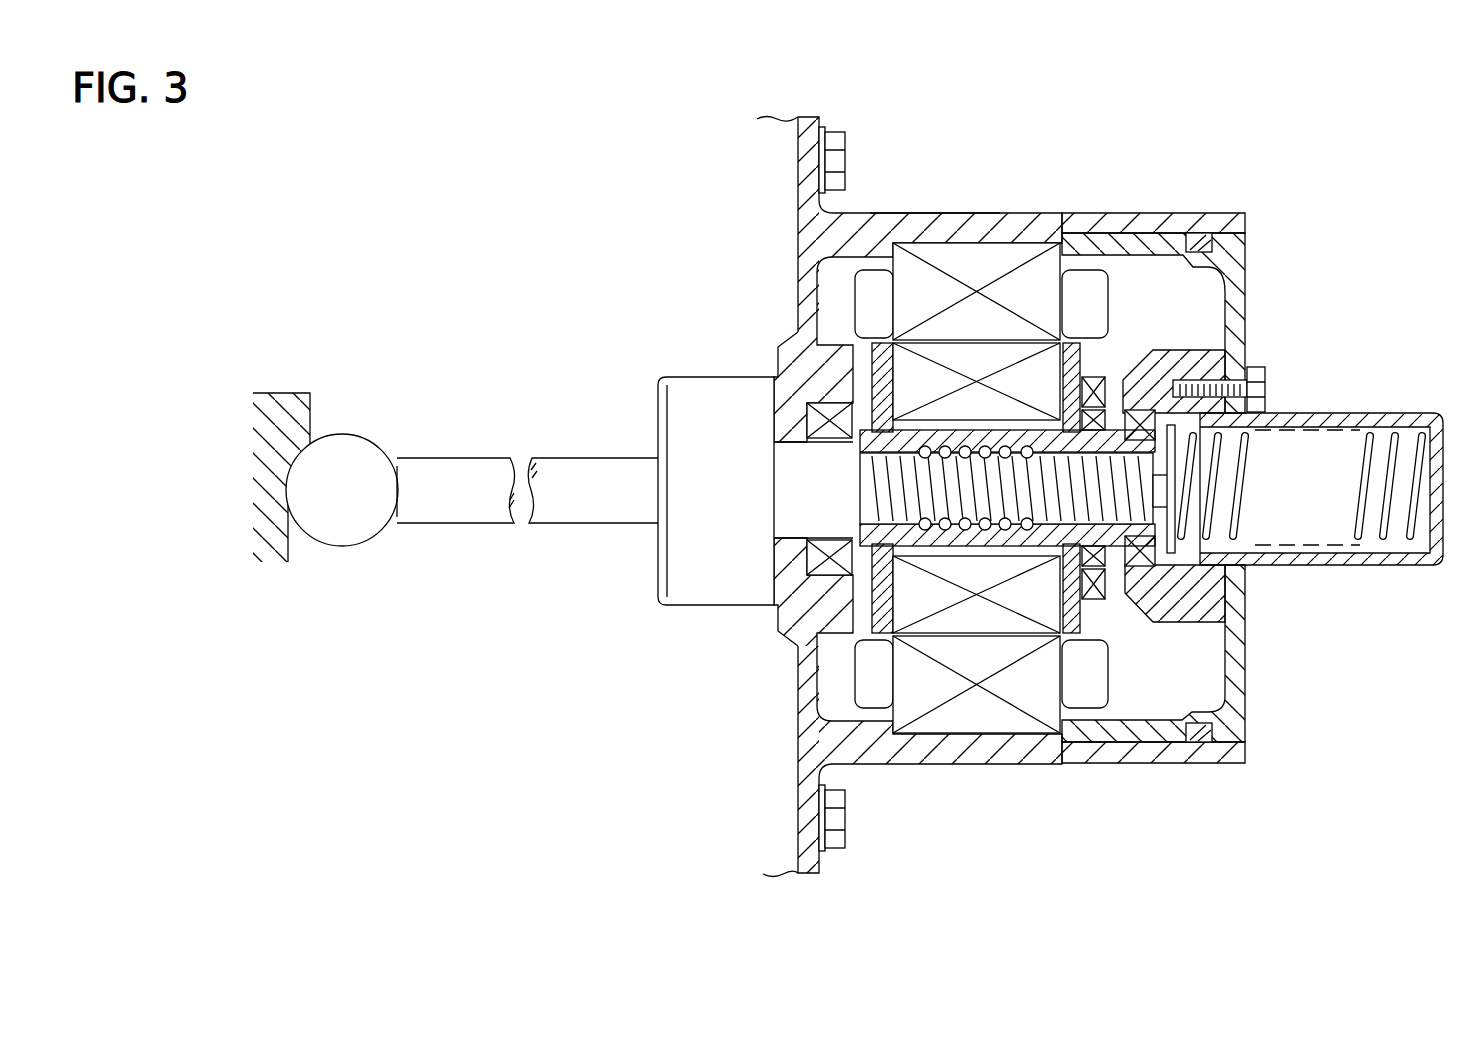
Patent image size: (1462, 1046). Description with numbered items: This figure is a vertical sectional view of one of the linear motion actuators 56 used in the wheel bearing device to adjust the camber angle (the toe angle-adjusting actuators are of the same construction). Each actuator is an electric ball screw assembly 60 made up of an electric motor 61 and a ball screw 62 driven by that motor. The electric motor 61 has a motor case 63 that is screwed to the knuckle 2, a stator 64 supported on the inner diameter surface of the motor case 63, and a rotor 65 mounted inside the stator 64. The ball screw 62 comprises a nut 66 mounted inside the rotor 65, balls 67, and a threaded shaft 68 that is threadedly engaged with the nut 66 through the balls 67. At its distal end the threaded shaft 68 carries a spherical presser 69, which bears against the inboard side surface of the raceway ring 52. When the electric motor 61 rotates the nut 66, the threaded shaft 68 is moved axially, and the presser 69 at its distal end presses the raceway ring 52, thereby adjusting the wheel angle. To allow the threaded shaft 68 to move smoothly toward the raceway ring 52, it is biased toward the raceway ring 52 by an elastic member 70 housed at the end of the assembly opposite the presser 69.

The knuckle 2 is at (774, 113).
The raceway ring 52 is at (275, 405).
The camber angle-adjusting linear motion actuator 56 is at (913, 209).
The electric ball screw assembly 60 is at (784, 328).
The electric motor 61 is at (1104, 206).
The ball screw 62 is at (790, 640).
The motor case 63 is at (1165, 222).
The stator 64 is at (1000, 255).
The rotor 65 is at (1050, 370).
The nut 66 is at (923, 430).
The balls 67 is at (1003, 448).
The threaded shaft 68 is at (888, 488).
The spherical presser 69 is at (356, 450).
The elastic member 70 is at (1380, 440).